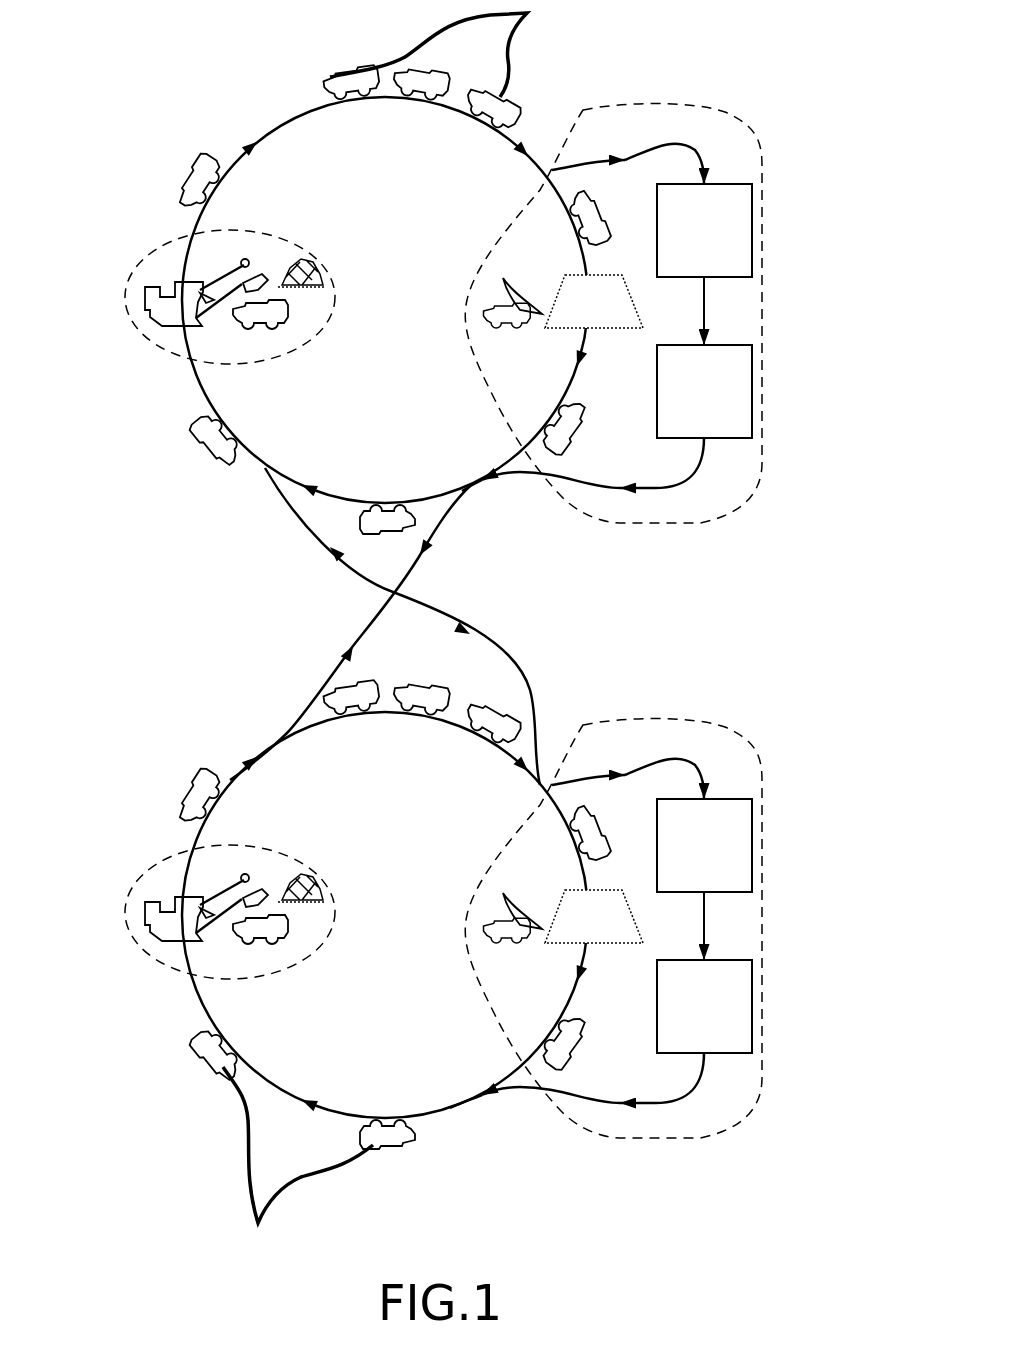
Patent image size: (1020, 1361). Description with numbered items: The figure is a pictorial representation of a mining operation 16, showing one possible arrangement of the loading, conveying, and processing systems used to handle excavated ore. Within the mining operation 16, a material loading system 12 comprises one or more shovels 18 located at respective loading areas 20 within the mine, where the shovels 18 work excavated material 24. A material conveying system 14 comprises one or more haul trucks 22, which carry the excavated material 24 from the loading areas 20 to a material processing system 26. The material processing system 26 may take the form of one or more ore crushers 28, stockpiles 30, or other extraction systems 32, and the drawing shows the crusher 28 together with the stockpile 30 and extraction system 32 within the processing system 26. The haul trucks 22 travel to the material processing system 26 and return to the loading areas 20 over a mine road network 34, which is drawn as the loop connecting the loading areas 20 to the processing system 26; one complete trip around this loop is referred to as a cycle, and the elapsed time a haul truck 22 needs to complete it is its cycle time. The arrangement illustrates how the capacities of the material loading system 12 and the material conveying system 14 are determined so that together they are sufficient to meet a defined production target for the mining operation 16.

The material loading system 12 is at (136, 252).
The material conveying system 14 is at (420, 126).
The mining operation 16 is at (136, 99).
The shovel 18 is at (162, 318).
The loading area 20 is at (252, 226).
The haul truck 22 is at (391, 627).
The excavated material 24 is at (318, 268).
The material processing system 26 is at (722, 108).
The ore crusher 28 is at (560, 328).
The stockpile 30 is at (754, 216).
The extraction system 32 is at (754, 388).
The mine road network 34 is at (712, 152).